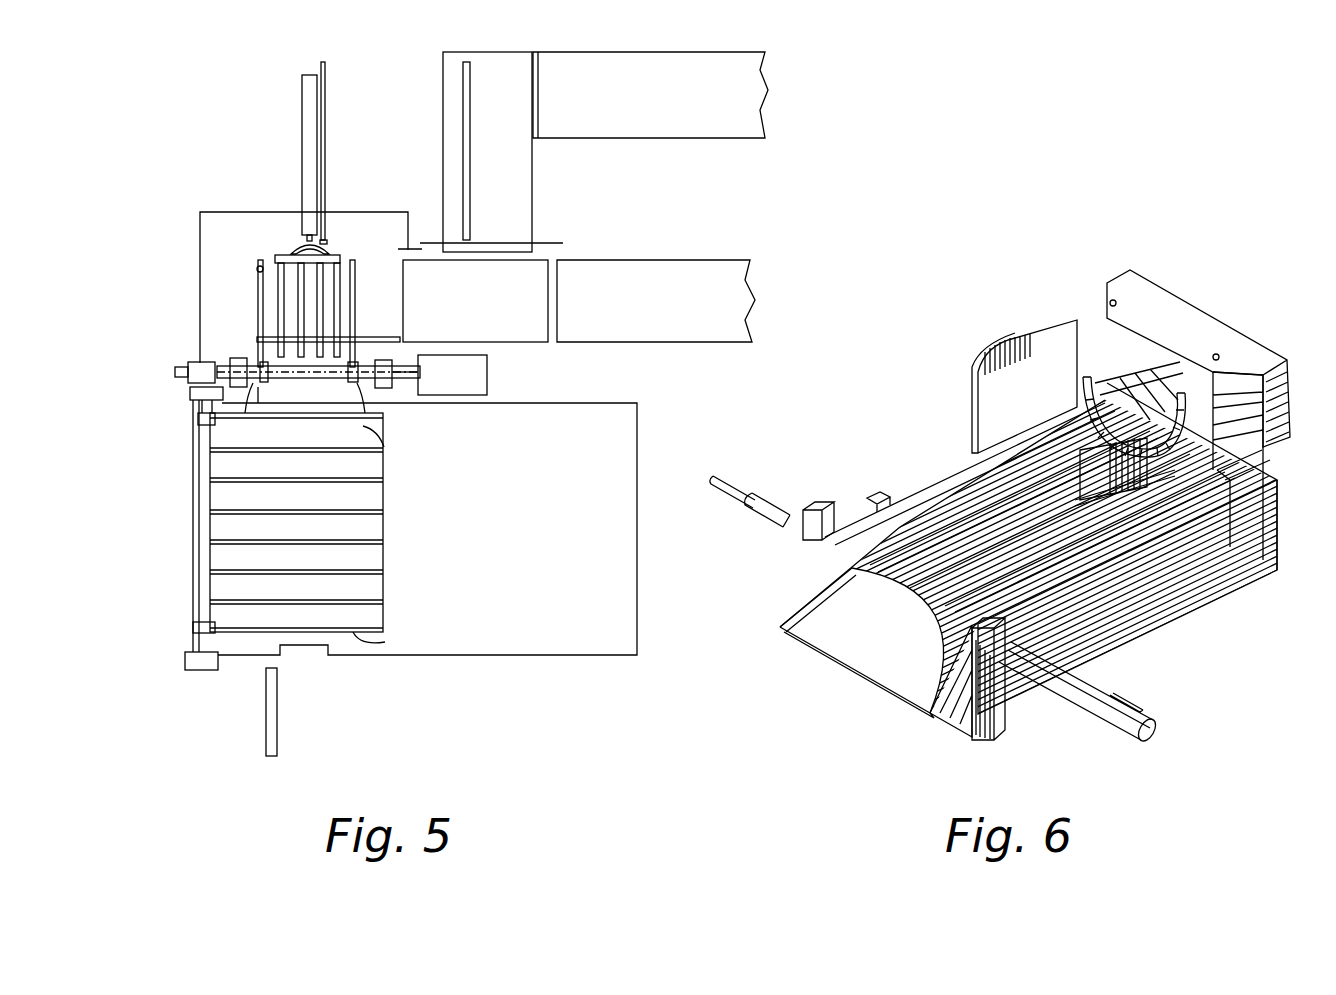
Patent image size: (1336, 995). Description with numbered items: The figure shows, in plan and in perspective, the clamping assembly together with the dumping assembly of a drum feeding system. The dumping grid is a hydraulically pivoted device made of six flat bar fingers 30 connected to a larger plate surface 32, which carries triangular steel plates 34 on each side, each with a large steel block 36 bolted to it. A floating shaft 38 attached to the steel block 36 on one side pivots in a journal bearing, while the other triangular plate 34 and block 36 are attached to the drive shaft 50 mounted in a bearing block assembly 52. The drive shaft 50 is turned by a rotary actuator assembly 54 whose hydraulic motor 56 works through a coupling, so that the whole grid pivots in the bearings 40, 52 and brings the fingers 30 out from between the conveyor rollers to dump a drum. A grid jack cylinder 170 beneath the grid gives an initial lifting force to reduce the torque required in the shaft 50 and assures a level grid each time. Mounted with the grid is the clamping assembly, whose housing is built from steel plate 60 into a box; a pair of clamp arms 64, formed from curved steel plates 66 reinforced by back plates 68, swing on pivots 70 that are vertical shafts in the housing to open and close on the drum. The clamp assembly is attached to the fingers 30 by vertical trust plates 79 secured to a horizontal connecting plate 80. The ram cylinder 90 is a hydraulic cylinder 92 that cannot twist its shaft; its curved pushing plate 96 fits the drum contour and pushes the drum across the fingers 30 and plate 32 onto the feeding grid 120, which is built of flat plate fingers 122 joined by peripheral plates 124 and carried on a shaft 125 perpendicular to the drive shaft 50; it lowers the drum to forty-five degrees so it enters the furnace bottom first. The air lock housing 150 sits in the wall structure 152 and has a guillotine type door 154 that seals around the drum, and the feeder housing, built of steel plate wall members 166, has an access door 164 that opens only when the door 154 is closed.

In FIG. 5, the bar fingers 30 is at (331, 303).
In FIG. 6, the bar fingers 30 is at (1145, 573).
In FIG. 6, the plate surface 32 is at (893, 630).
In FIG. 6, the triangular steel plates 34 is at (797, 584).
In FIG. 6, the steel block 36 is at (983, 727).
In FIG. 5, the floating shaft 38 is at (212, 362).
In FIG. 6, the floating shaft 38 is at (768, 497).
In FIG. 5, the bearings 40 is at (262, 410).
In FIG. 5, the drive shaft 50 is at (384, 390).
In FIG. 6, the drive shaft 50 is at (1100, 697).
In FIG. 5, the bearing block assembly 52 is at (390, 388).
In FIG. 5, the rotary actuator assembly 54 is at (473, 404).
In FIG. 5, the hydraulic motor 56 is at (464, 383).
In FIG. 6, the steel plate 60 is at (1160, 307).
In FIG. 6, the clamp arms 64 is at (963, 401).
In FIG. 6, the curved steel plates 66 is at (1058, 380).
In FIG. 6, the back plates 68 is at (973, 367).
In FIG. 6, the pivots 70 is at (1214, 355).
In FIG. 6, the trust plates 79 is at (1262, 487).
In FIG. 6, the horizontal connecting plate 80 is at (1205, 480).
In FIG. 5, the ram cylinder 90 is at (294, 126).
In FIG. 5, the hydraulic cylinder 92 is at (309, 140).
In FIG. 5, the curved pushing plate 96 is at (330, 253).
In FIG. 5, the feeding grid 120 is at (425, 540).
In FIG. 5, the flat plate fingers 122 is at (360, 508).
In FIG. 5, the peripheral plates 124 is at (384, 447).
In FIG. 5, the shaft 125 is at (204, 528).
In FIG. 5, the air lock housing 150 is at (421, 353).
In FIG. 5, the wall structure 152 is at (572, 403).
In FIG. 5, the guillotine type door 154 is at (403, 326).
In FIG. 5, the access door 164 is at (318, 410).
In FIG. 5, the steel plate wall members 166 is at (238, 460).
In FIG. 5, the grid jack cylinder 170 is at (257, 271).